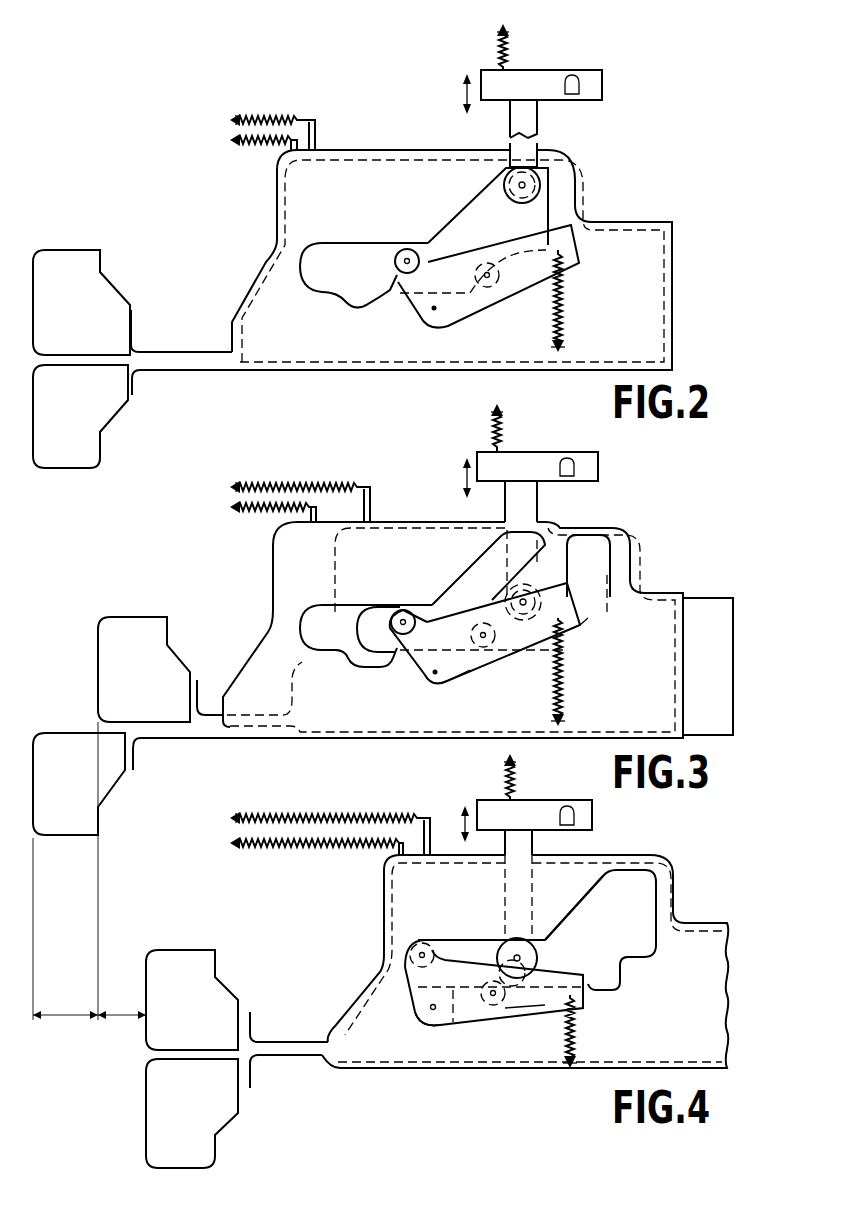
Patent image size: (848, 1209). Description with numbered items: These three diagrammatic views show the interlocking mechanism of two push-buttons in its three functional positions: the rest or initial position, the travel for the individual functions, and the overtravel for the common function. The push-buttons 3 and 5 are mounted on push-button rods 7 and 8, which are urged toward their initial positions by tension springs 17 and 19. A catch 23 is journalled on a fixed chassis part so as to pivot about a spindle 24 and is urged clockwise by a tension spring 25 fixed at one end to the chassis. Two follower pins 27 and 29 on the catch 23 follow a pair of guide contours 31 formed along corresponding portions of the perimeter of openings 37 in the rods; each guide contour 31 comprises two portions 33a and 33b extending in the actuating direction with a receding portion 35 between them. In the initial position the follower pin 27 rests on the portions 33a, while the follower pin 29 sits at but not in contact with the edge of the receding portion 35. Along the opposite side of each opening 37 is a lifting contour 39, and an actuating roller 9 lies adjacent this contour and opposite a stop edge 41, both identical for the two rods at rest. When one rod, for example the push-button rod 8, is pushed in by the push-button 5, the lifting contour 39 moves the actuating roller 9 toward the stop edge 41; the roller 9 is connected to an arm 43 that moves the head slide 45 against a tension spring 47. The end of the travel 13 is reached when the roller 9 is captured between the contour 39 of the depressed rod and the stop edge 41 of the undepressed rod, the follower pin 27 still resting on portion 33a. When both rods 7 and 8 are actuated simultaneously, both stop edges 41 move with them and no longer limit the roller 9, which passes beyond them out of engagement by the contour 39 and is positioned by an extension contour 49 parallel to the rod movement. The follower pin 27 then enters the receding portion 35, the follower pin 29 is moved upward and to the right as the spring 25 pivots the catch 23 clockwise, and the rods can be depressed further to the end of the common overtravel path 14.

In FIG. 2, the push-button 3 is at (75, 470).
In FIG. 3, the push-button 3 is at (75, 835).
In FIG. 4, the push-button 3 is at (165, 1105).
In FIG. 2, the push-button 5 is at (72, 262).
In FIG. 3, the push-button 5 is at (115, 660).
In FIG. 4, the push-button 5 is at (160, 983).
In FIG. 2, the push-button rod 7 is at (656, 310).
In FIG. 3, the push-button rod 7 is at (257, 676).
In FIG. 4, the push-button rod 7 is at (355, 997).
In FIG. 3, the push-button rod 8 is at (710, 612).
In FIG. 4, the push-button rod 8 is at (385, 905).
In FIG. 2, the actuating roller 9 is at (538, 201).
In FIG. 3, the actuating roller 9 is at (513, 588).
In FIG. 4, the actuating roller 9 is at (528, 947).
In FIG. 4, the travel 13 is at (65, 1020).
In FIG. 4, the common overtravel path 14 is at (125, 1020).
In FIG. 2, the tension spring 17 is at (270, 148).
In FIG. 3, the tension spring 17 is at (258, 512).
In FIG. 4, the tension spring 17 is at (275, 848).
In FIG. 2, the tension spring 19 is at (278, 117).
In FIG. 3, the tension spring 19 is at (262, 485).
In FIG. 4, the tension spring 19 is at (292, 816).
In FIG. 3, the catch 23 is at (448, 683).
In FIG. 4, the catch 23 is at (420, 1027).
In FIG. 2, the spindle 24 is at (434, 312).
In FIG. 3, the spindle 24 is at (435, 676).
In FIG. 4, the spindle 24 is at (420, 1007).
In FIG. 2, the tension spring 25 is at (563, 307).
In FIG. 3, the tension spring 25 is at (565, 693).
In FIG. 4, the tension spring 25 is at (576, 1040).
In FIG. 2, the follower pin 27 is at (497, 283).
In FIG. 3, the follower pin 27 is at (496, 648).
In FIG. 4, the follower pin 27 is at (493, 1008).
In FIG. 2, the follower pin 29 is at (395, 261).
In FIG. 3, the follower pin 29 is at (402, 608).
In FIG. 4, the follower pin 29 is at (385, 951).
In FIG. 2, the guide contour 31 is at (403, 302).
In FIG. 3, the guide contour 31 is at (568, 642).
In FIG. 2, the portion of guide contour 33a is at (487, 312).
In FIG. 3, the portion of guide contour 33a is at (398, 688).
In FIG. 4, the portion of guide contour 33a is at (598, 993).
In FIG. 2, the portion of guide contour 33b is at (327, 300).
In FIG. 3, the portion of guide contour 33b is at (376, 670).
In FIG. 4, the portion of guide contour 33b is at (438, 1016).
In FIG. 2, the receding portion 35 is at (355, 306).
In FIG. 3, the receding portion 35 is at (470, 671).
In FIG. 4, the receding portion 35 is at (522, 1002).
In FIG. 2, the opening 37 is at (322, 254).
In FIG. 3, the opening 37 is at (355, 636).
In FIG. 4, the opening 37 is at (640, 900).
In FIG. 2, the lifting contour 39 is at (470, 208).
In FIG. 3, the lifting contour 39 is at (488, 567).
In FIG. 4, the lifting contour 39 is at (588, 895).
In FIG. 2, the stop edge 41 is at (526, 258).
In FIG. 3, the stop edge 41 is at (598, 628).
In FIG. 4, the stop edge 41 is at (632, 963).
In FIG. 2, the arm 43 is at (525, 131).
In FIG. 3, the arm 43 is at (527, 500).
In FIG. 4, the arm 43 is at (545, 843).
In FIG. 2, the head slide 45 is at (532, 92).
In FIG. 3, the head slide 45 is at (545, 458).
In FIG. 4, the head slide 45 is at (491, 810).
In FIG. 2, the tension spring 47 is at (510, 50).
In FIG. 3, the tension spring 47 is at (503, 432).
In FIG. 4, the tension spring 47 is at (517, 782).
In FIG. 2, the extension contour 49 is at (347, 242).
In FIG. 3, the extension contour 49 is at (426, 603).
In FIG. 4, the extension contour 49 is at (470, 938).